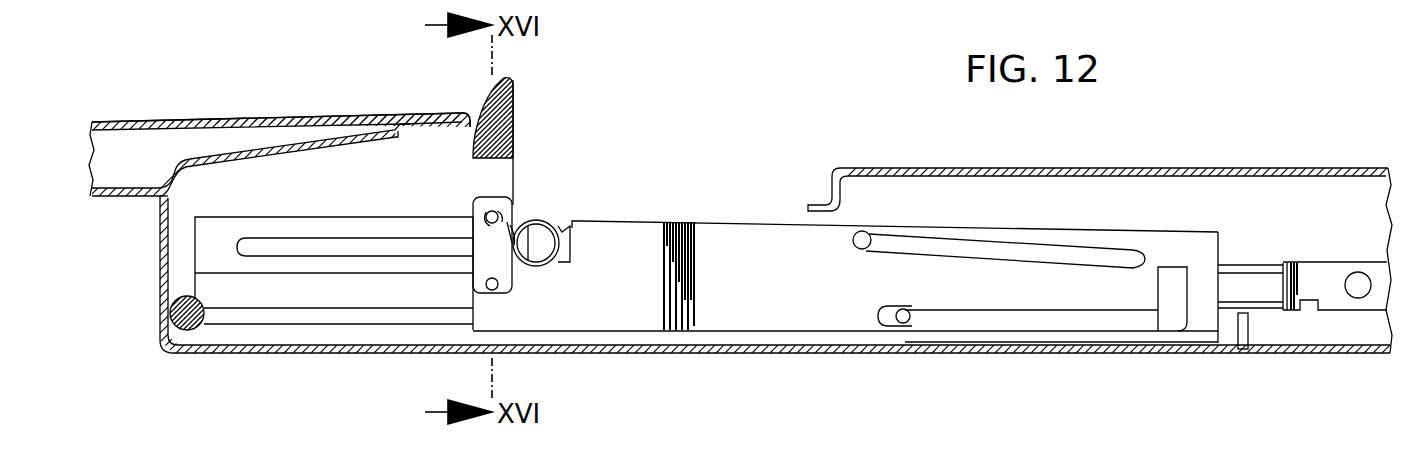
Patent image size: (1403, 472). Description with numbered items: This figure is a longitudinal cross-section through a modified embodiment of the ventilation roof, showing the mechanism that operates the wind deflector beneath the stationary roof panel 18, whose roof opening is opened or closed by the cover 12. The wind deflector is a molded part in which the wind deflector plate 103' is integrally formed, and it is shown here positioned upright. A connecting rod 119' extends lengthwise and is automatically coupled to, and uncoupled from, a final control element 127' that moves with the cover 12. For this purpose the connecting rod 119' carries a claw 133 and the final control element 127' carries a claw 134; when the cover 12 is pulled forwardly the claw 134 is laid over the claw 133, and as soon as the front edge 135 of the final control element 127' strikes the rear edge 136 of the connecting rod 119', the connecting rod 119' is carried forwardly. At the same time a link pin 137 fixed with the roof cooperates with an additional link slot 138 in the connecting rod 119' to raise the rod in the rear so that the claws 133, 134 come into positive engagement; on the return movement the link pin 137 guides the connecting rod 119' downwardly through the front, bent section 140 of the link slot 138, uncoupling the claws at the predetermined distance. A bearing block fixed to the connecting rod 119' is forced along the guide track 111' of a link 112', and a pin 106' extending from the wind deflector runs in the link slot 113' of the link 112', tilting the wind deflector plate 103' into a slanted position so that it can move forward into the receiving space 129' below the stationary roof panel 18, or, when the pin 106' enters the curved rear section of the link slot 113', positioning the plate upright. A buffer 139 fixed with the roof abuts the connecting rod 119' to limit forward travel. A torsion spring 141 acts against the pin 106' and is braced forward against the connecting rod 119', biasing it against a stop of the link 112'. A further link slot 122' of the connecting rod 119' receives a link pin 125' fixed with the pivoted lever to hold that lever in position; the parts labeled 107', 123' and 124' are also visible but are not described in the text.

The cover 12 is at (1360, 168).
The stationary roof panel 18 is at (192, 122).
The wind deflector plate 103' is at (536, 185).
The pin 106' is at (544, 196).
The pin 107' is at (459, 333).
The guide track 111' is at (338, 314).
The link 112' is at (289, 257).
The link slot 113' is at (355, 166).
The connecting rod 119' is at (845, 316).
The link slot 122' is at (1143, 323).
The plate 123' is at (1061, 366).
The bracket 124' is at (1177, 340).
The link pin 125' is at (910, 360).
The final control element 127' is at (1341, 338).
The receiving space 129' is at (275, 136).
The claw 133 is at (1240, 340).
The claw 134 is at (1295, 330).
The front edge 135 is at (1283, 280).
The rear edge 136 is at (1222, 250).
The link pin 137 is at (862, 230).
The link slot 138 is at (1020, 252).
The buffer 139 is at (172, 313).
The front, bent section 140 is at (905, 248).
The torsion spring 141 is at (560, 252).